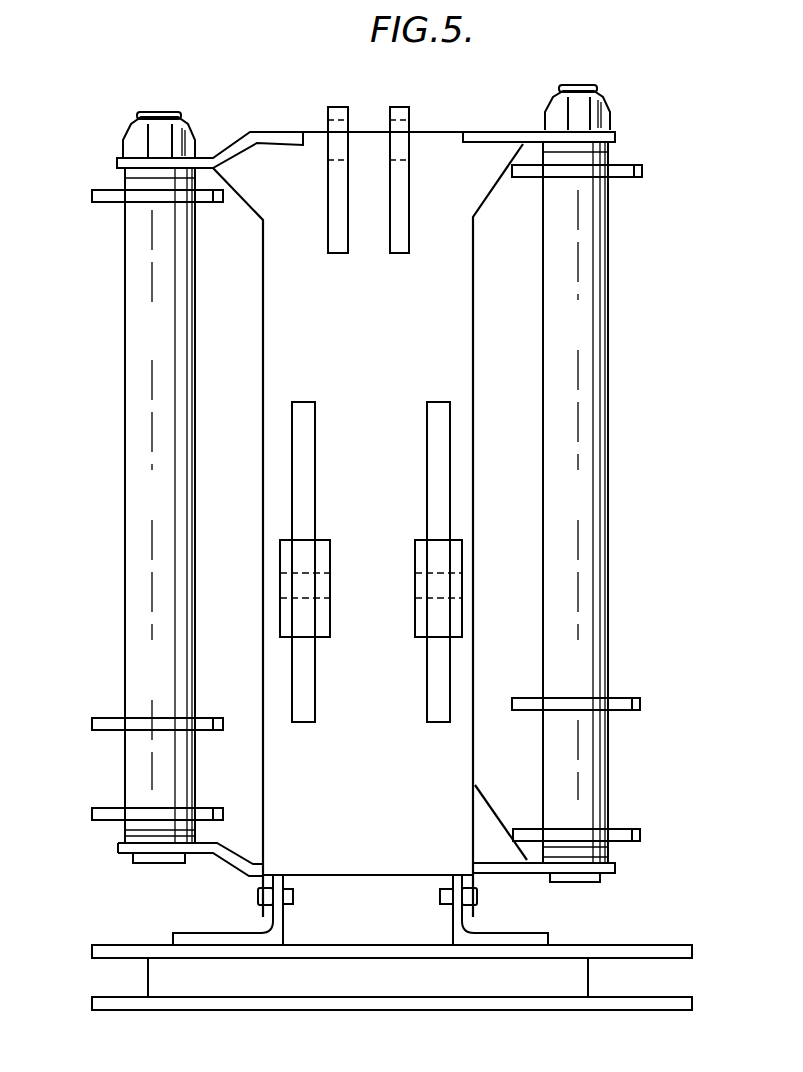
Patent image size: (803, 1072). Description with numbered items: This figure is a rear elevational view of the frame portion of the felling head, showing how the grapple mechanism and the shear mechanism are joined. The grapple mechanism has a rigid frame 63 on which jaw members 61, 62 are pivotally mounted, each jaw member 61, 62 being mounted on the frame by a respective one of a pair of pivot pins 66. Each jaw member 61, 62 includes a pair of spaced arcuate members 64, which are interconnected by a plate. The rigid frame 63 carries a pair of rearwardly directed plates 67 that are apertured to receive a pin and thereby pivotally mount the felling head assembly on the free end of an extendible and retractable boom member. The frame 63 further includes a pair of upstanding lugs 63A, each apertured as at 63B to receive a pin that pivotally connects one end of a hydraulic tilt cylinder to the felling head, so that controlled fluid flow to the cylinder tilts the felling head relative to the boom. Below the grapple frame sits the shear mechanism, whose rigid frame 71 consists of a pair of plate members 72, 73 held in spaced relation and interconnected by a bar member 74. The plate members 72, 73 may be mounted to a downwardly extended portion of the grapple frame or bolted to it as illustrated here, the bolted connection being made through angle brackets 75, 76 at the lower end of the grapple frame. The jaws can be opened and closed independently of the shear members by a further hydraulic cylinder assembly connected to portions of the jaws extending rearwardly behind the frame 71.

The jaw member 61 is at (611, 259).
The jaw member 62 is at (122, 286).
The rigid frame 63 is at (438, 152).
The upstanding lug 63A is at (400, 118).
The aperture 63B is at (413, 120).
The arcuate member 64 is at (632, 168).
The pivot pin 66 is at (155, 118).
The rearwardly directed plate 67 is at (430, 470).
The rigid frame 71 is at (392, 976).
The plate member 72 is at (625, 946).
The plate member 73 is at (610, 1002).
The bar member 74 is at (491, 988).
The left angle bracket 75 is at (283, 925).
The right angle bracket 76 is at (452, 925).